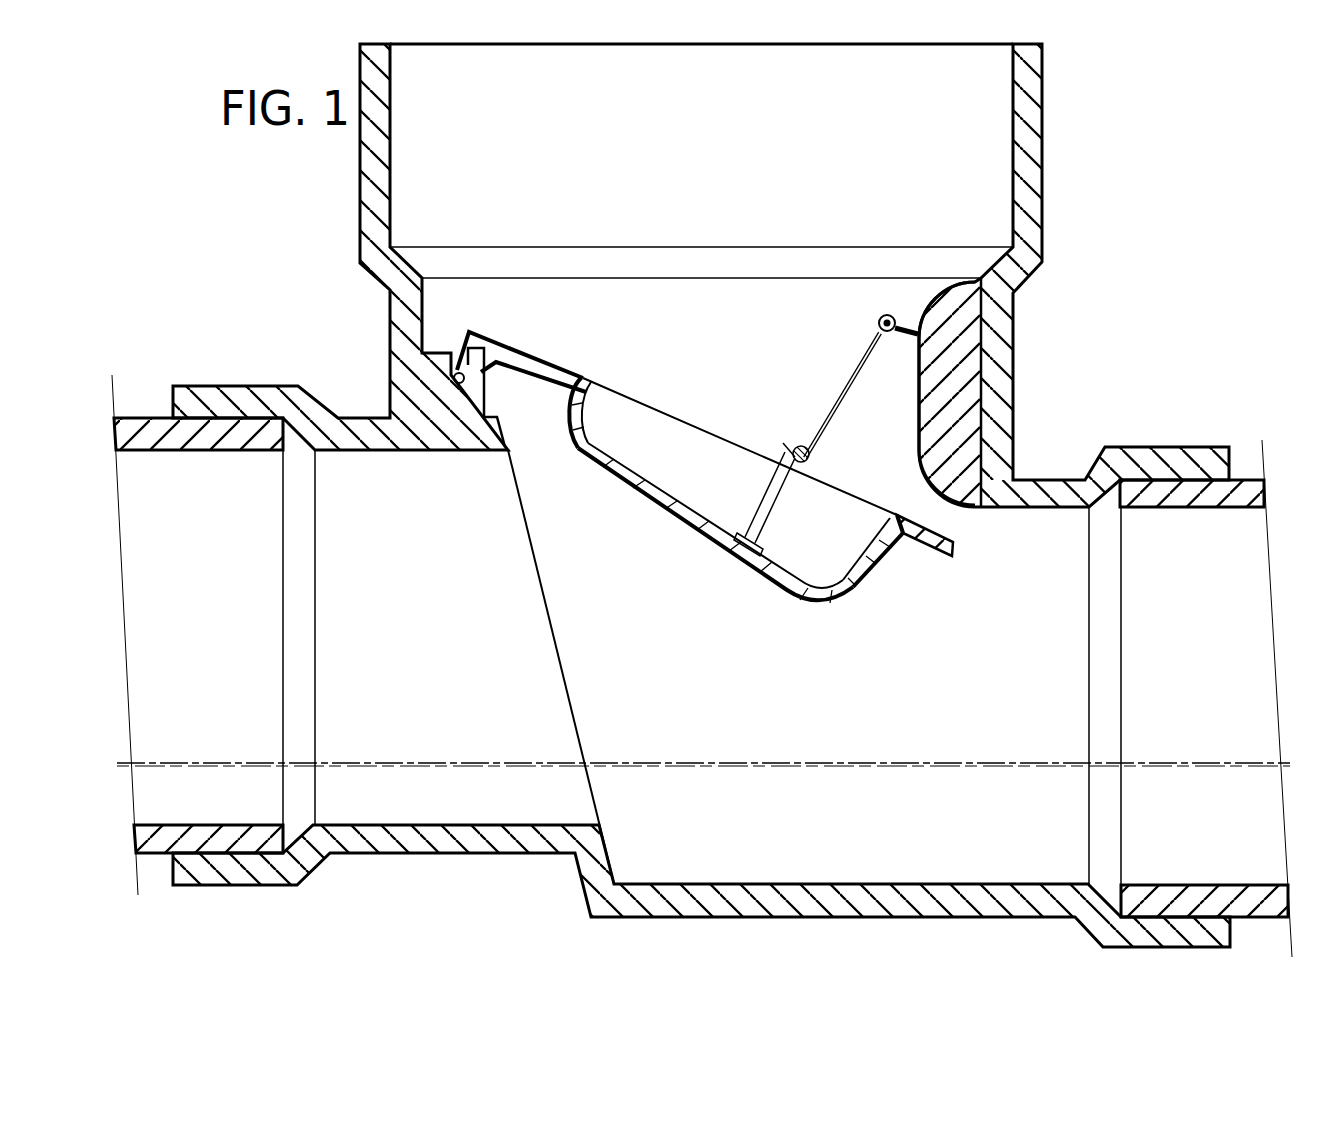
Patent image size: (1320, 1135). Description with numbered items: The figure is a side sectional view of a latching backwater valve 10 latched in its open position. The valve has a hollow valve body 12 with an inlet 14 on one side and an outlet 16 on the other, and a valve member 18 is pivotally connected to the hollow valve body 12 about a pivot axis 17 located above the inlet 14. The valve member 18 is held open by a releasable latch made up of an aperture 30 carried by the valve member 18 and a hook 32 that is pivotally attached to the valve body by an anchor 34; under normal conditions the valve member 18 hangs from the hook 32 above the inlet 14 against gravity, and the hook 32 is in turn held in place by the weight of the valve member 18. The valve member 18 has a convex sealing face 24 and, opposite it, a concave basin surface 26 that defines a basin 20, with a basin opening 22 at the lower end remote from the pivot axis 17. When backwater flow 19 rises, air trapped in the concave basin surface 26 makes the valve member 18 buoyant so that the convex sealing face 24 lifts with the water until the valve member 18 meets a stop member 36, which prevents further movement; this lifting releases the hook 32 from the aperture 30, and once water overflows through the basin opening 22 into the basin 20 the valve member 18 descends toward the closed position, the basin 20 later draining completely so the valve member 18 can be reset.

The backwater valve 10 is at (322, 236).
The hollow valve body 12 is at (388, 340).
The inlet 14 is at (523, 690).
The outlet 16 is at (1011, 710).
The pivot axis 17 is at (458, 370).
The valve member 18 is at (878, 553).
The backwater flow 19 is at (718, 762).
The basin 20 is at (670, 452).
The basin opening 22 is at (722, 433).
The convex sealing face 24 is at (660, 510).
The concave basin surface 26 is at (620, 462).
The aperture 30 is at (793, 497).
The hook 32 is at (862, 380).
The anchor 34 is at (893, 331).
The stop member 36 is at (965, 494).